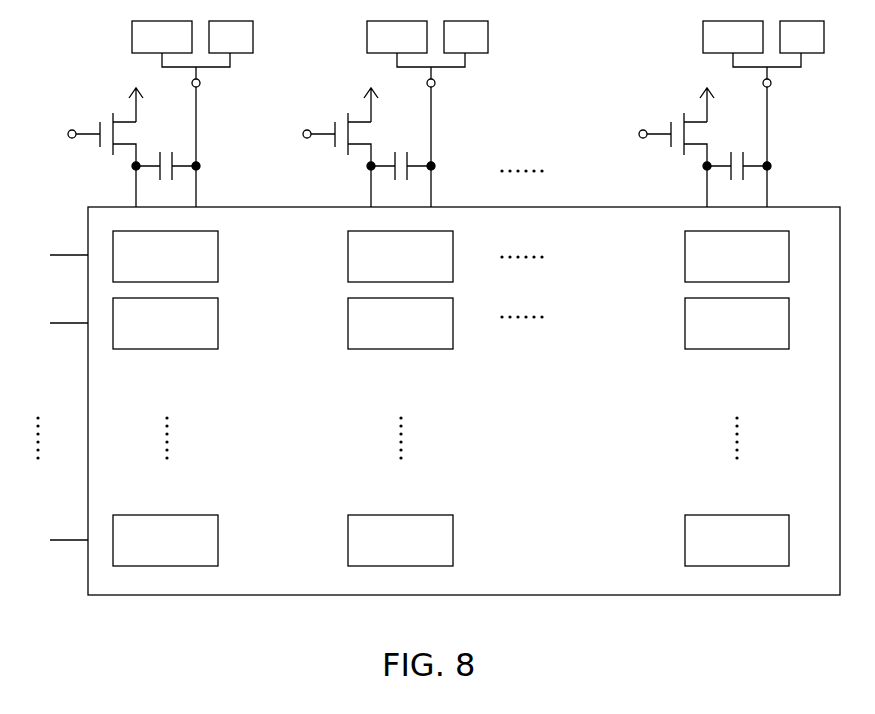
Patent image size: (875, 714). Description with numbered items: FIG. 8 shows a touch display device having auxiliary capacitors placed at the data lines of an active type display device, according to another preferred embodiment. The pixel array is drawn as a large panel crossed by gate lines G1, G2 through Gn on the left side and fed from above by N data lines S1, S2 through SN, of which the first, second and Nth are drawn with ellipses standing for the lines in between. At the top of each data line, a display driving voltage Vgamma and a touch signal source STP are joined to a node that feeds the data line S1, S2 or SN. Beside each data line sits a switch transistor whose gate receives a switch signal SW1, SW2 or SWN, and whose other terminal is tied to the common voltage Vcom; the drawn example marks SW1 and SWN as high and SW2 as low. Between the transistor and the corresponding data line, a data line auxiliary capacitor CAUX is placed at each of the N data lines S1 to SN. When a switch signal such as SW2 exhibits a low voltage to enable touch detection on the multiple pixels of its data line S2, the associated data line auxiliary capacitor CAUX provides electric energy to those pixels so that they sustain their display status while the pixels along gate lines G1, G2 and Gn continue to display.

The switch signal SW1 is at (77, 159).
The switch signal SW2 is at (312, 159).
The switch signal SWN is at (645, 159).
The data line S1 is at (208, 137).
The data line S2 is at (443, 137).
The data line SN is at (780, 137).
The data line auxiliary capacitor CAUX is at (451, 152).
The common voltage Vcom is at (418, 93).
The display driving voltage Vgamma is at (466, 44).
The touch signal source STP is at (516, 37).
The gate line G1 is at (54, 256).
The gate line G2 is at (54, 324).
The gate line Gn is at (54, 541).